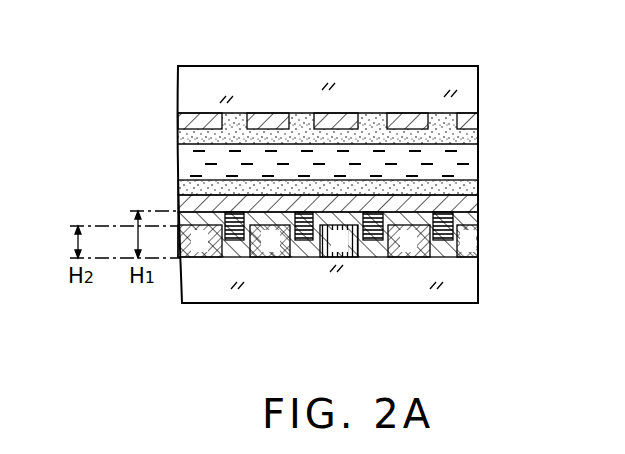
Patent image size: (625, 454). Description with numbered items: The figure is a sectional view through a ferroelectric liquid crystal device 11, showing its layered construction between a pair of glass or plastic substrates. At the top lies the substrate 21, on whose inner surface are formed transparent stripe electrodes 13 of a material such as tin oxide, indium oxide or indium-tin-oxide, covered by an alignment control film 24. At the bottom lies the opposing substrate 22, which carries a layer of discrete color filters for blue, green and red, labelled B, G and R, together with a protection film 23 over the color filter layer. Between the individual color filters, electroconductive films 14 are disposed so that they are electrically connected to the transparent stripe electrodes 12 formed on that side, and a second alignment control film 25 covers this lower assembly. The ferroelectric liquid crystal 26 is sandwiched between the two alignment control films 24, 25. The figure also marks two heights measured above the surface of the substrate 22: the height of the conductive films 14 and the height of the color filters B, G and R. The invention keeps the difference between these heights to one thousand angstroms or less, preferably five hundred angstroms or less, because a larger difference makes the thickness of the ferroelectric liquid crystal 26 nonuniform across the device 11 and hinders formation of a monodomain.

The ferroelectric liquid crystal device 11 is at (404, 64).
The substrate 21 is at (276, 79).
The transparent stripe electrodes 13 is at (478, 117).
The alignment control film 24 is at (478, 141).
The ferroelectric liquid crystal 26 is at (478, 161).
The alignment control film 25 is at (478, 188).
The transparent stripe electrodes 12 is at (478, 202).
The protection film 23 is at (478, 216).
The electroconductive films 14 is at (443, 243).
The substrate 22 is at (290, 303).